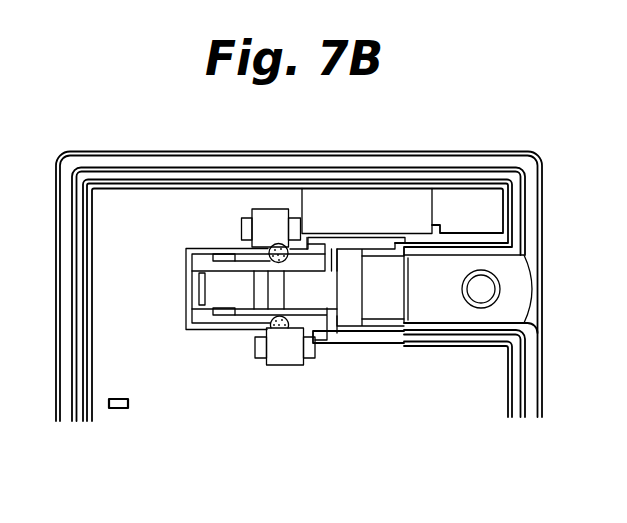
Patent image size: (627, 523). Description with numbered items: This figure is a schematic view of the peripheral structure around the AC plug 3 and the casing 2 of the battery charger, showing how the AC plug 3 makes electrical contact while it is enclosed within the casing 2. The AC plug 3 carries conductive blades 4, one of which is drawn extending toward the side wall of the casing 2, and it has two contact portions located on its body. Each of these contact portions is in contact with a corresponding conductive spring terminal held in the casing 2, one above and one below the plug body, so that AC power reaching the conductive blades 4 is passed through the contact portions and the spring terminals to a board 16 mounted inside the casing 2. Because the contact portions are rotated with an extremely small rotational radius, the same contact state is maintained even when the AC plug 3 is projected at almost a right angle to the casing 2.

The casing 2 is at (542, 166).
The AC plug 3 is at (383, 303).
The conductive blade 4 is at (513, 278).
The board 16 is at (380, 200).